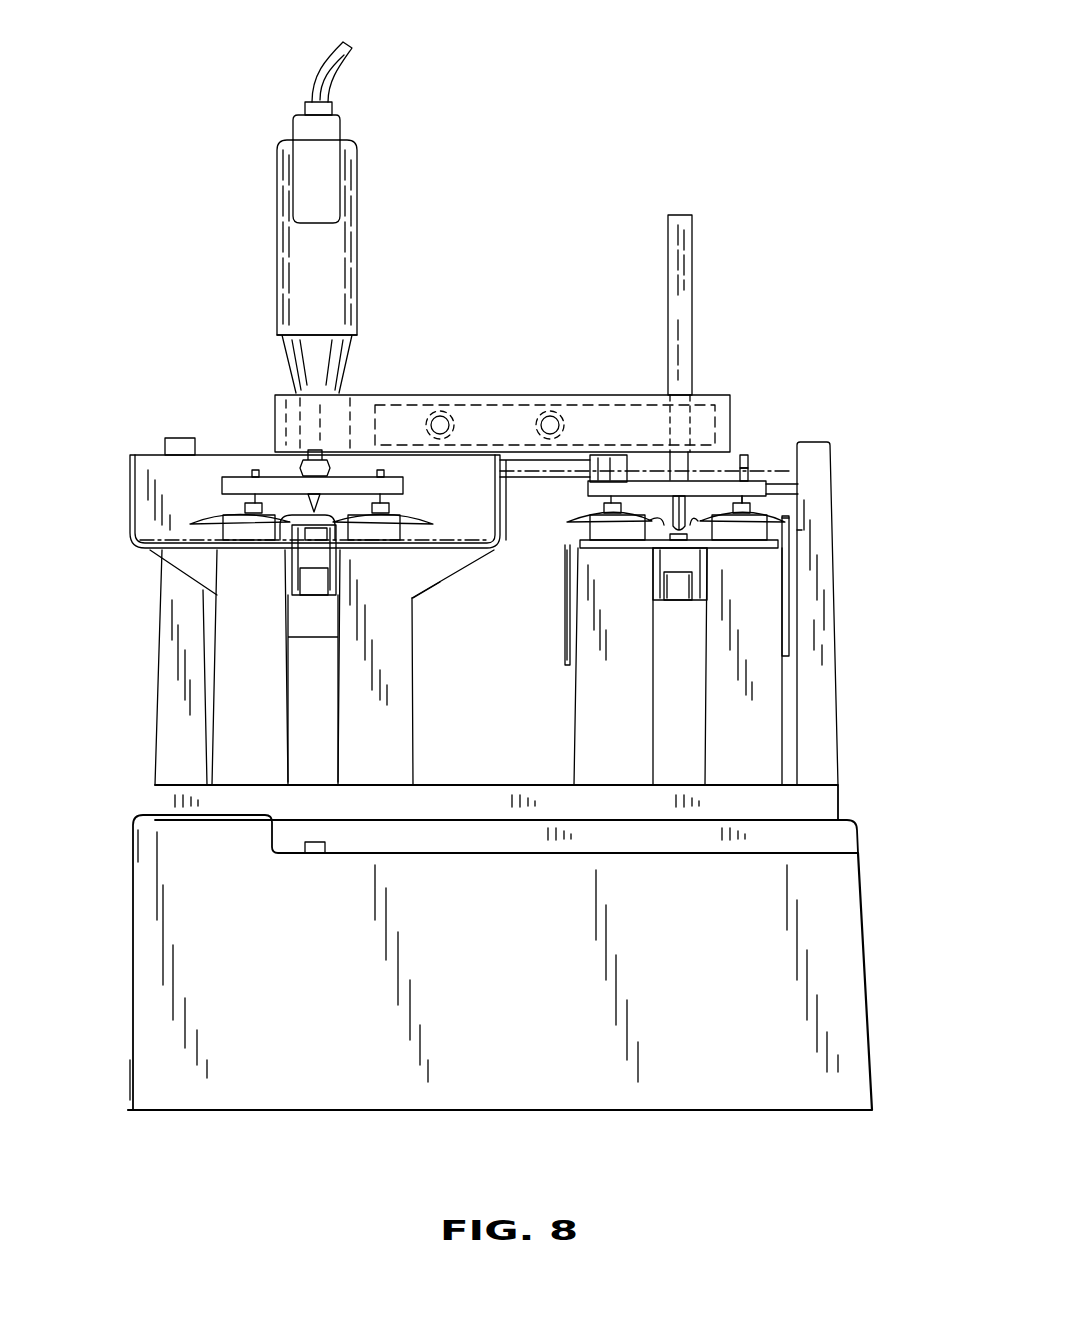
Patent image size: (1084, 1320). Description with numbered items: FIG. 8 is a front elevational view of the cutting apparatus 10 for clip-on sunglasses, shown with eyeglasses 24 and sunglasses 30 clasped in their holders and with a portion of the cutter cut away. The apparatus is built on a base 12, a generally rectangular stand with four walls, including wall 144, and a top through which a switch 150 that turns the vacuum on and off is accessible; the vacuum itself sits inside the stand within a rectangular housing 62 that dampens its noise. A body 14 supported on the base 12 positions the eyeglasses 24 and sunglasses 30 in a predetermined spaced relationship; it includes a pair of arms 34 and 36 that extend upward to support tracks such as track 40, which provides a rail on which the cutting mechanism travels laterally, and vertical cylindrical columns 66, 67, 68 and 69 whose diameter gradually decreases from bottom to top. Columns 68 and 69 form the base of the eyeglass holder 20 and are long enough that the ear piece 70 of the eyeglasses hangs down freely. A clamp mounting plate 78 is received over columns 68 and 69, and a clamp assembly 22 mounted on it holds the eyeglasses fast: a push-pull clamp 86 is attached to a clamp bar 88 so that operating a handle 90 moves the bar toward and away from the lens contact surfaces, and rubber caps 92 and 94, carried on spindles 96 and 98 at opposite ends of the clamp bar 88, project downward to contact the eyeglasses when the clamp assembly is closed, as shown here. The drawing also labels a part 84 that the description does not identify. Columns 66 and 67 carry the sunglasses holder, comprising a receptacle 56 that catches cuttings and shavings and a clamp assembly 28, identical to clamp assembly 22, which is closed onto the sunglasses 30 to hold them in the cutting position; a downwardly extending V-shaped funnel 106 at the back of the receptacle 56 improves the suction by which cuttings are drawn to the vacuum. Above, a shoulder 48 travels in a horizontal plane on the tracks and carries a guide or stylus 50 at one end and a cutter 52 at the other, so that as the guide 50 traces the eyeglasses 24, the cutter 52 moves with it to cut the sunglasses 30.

The cutting apparatus 10 is at (822, 246).
The base 12 is at (882, 1005).
The body 14 is at (842, 645).
The eyeglass holder 20 is at (805, 532).
The clamp assembly 22 is at (582, 491).
The eyeglasses 24 is at (790, 520).
The clamp assembly 28 is at (222, 458).
The clip-on sunglasses 30 is at (410, 506).
The arm 34 is at (160, 640).
The arm 36 is at (820, 578).
The track 40 is at (760, 478).
The shoulder 48 is at (642, 410).
The guide 50 is at (692, 282).
The cutter 52 is at (358, 275).
The receptacle 56 is at (494, 552).
The housing 62 is at (860, 843).
The cylindrical column 66 is at (265, 762).
The cylindrical column 67 is at (390, 762).
The cylindrical column 68 is at (632, 756).
The cylindrical column 69 is at (757, 728).
The ear piece 70 is at (564, 606).
The clamp mounting plate 78 is at (580, 548).
The clamp 84 is at (660, 610).
The clamp 86 is at (700, 600).
The clamp bar 88 is at (660, 480).
The handle 90 is at (700, 595).
The rubber cap 92 is at (790, 500).
The rubber cap 94 is at (592, 506).
The spindle 96 is at (745, 470).
The spindle 98 is at (605, 455).
The V-shaped funnel 106 is at (440, 588).
The wall 144 is at (135, 1070).
The switch 150 is at (318, 842).